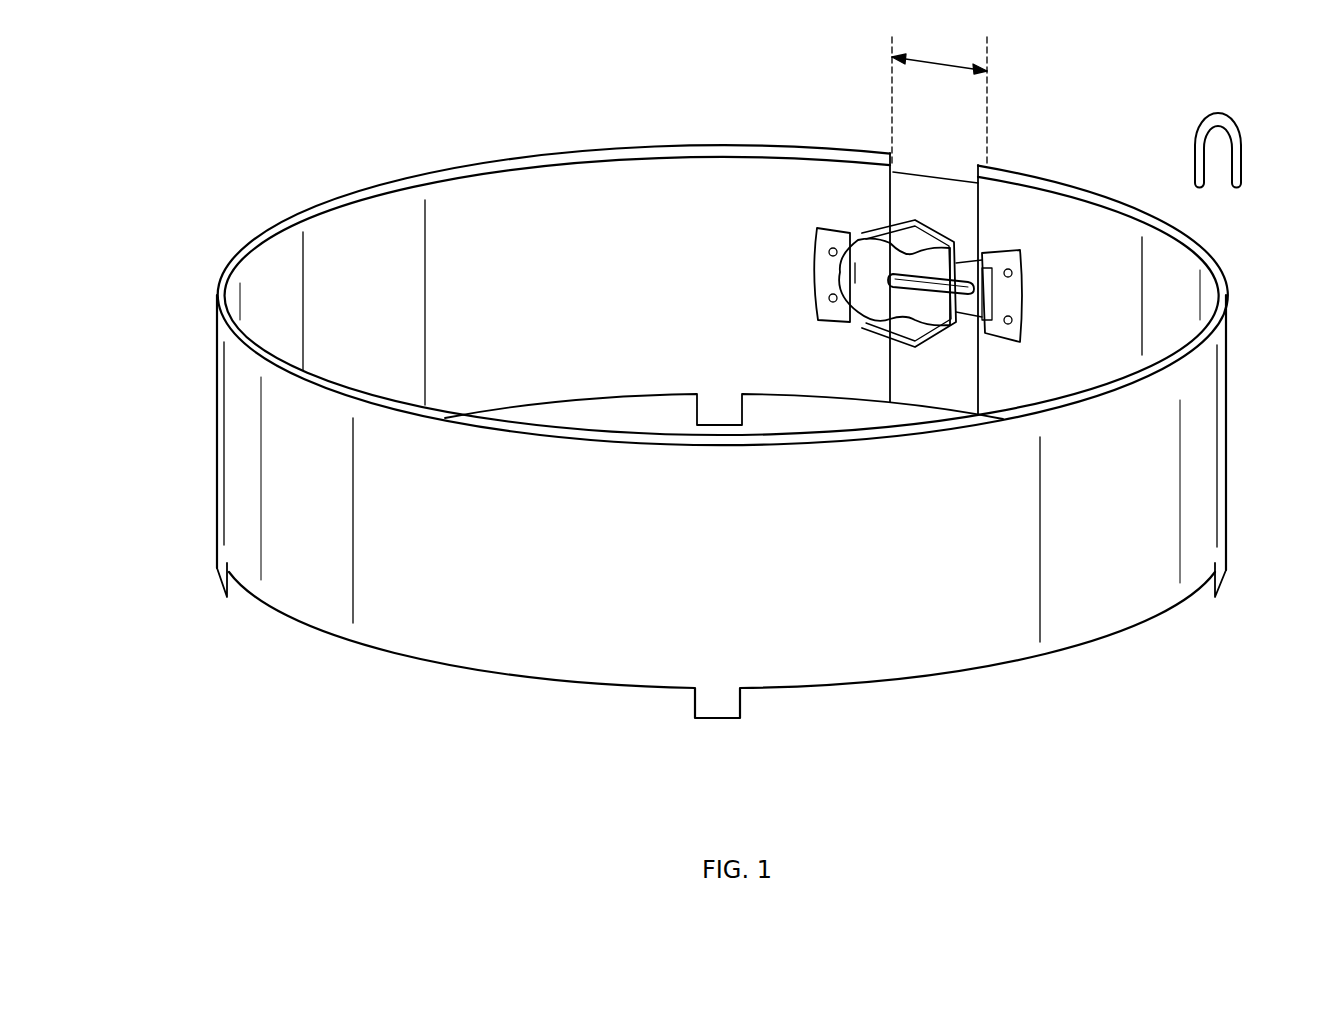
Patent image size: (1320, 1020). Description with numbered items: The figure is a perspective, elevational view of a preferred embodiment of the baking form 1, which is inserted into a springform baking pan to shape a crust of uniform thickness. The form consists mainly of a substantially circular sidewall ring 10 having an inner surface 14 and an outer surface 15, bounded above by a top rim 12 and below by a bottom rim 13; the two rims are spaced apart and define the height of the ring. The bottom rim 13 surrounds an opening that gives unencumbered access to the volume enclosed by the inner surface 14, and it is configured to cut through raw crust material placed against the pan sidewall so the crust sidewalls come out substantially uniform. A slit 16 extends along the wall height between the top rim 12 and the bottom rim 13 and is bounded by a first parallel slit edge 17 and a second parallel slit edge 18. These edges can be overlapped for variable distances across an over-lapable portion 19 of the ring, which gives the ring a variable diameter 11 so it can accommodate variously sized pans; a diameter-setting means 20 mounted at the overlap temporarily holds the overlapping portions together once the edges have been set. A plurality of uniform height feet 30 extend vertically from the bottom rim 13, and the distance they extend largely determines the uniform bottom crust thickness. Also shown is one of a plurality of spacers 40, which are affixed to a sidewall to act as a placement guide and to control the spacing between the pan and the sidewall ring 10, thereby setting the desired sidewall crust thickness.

The baking form 1 is at (1225, 278).
The sidewall ring 10 is at (216, 296).
The variable diameter 11 is at (940, 57).
The top rim 12 is at (462, 170).
The bottom rim 13 is at (440, 662).
The inner surface 14 is at (566, 190).
The outer surface 15 is at (272, 476).
The slit 16 is at (893, 150).
The first parallel slit edge 17 is at (980, 210).
The second parallel slit edge 18 is at (890, 203).
The over-lapable portion 19 is at (935, 177).
The diameter-setting means 20 is at (917, 221).
The feet 30 is at (217, 570).
The spacers 40 is at (1237, 128).